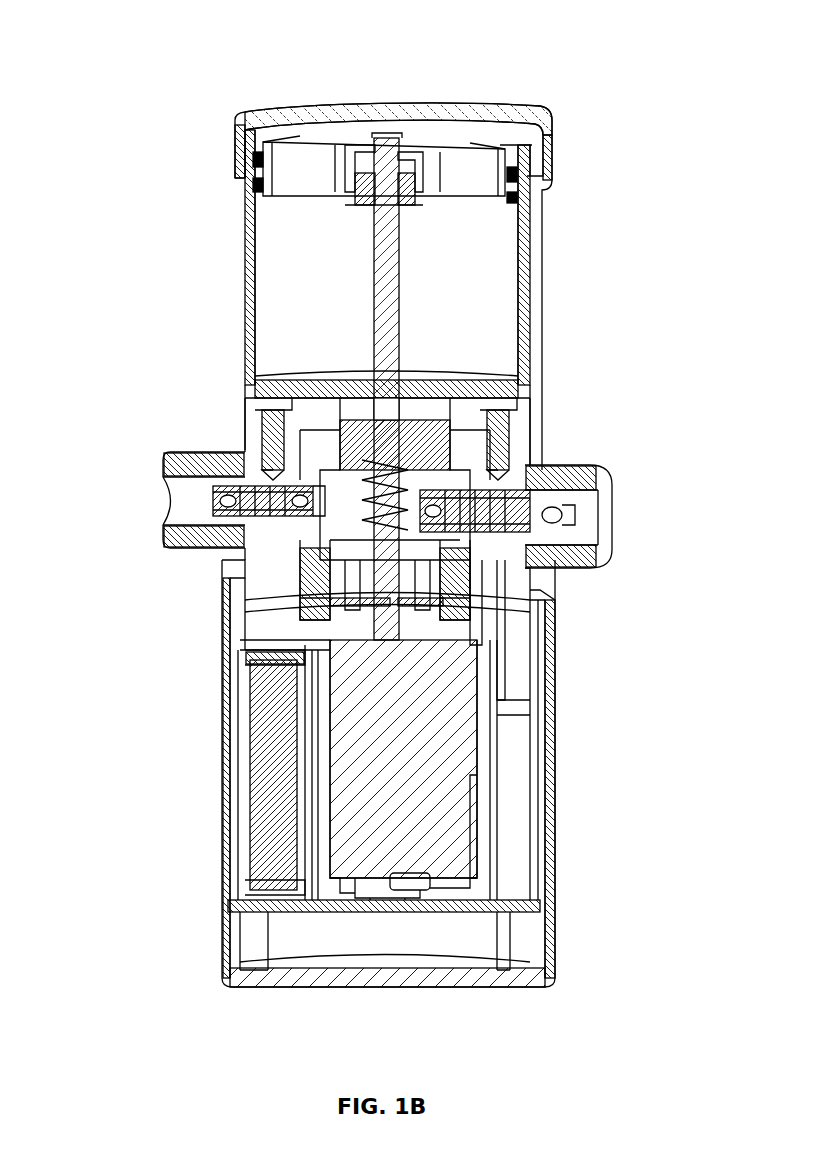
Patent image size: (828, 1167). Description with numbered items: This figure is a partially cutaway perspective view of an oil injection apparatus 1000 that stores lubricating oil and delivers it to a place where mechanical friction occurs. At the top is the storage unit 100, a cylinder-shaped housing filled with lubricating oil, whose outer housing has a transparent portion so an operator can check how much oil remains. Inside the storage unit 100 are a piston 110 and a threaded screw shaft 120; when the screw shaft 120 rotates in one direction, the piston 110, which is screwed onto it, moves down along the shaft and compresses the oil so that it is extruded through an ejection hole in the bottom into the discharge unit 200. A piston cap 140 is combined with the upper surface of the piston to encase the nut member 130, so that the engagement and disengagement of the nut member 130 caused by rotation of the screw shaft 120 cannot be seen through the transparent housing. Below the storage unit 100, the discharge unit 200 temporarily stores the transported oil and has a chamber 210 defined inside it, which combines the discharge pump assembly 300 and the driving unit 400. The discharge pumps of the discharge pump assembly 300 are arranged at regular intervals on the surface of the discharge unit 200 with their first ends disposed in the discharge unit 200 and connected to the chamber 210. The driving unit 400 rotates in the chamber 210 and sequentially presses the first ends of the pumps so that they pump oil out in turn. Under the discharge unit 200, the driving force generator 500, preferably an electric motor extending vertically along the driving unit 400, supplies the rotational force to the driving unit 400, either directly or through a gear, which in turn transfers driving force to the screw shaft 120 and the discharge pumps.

The oil injection apparatus 1000 is at (112, 58).
The storage unit 100 is at (525, 272).
The piston 110 is at (246, 214).
The screw shaft 120 is at (382, 298).
The nut member 130 is at (325, 198).
The piston cap 140 is at (420, 158).
The discharge unit 200 is at (528, 432).
The chamber 210 is at (235, 443).
The discharge pump assembly 300 is at (600, 475).
The driving unit 400 is at (240, 565).
The driving force generator 500 is at (328, 687).